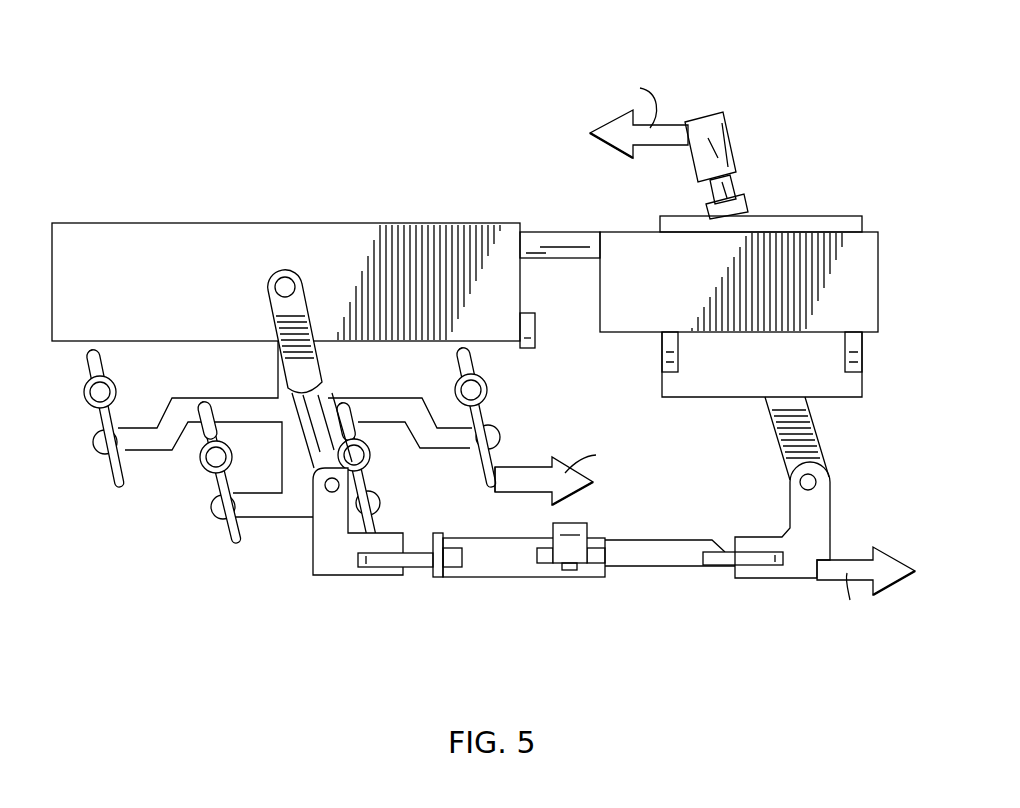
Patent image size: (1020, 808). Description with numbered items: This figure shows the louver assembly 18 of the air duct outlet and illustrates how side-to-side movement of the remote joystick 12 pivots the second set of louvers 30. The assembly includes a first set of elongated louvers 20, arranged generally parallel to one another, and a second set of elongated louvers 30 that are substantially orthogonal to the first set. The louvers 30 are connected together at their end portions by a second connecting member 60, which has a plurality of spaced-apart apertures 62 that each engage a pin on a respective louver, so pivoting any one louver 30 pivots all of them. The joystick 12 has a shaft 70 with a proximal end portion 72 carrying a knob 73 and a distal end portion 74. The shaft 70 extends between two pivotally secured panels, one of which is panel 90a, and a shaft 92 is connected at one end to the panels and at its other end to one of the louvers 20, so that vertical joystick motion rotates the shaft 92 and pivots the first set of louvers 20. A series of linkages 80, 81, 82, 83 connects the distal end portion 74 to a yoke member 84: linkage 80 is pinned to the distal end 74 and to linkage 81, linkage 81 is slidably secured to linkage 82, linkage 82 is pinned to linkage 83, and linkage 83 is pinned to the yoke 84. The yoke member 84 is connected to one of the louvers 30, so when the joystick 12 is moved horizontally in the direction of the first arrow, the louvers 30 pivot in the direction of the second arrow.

The louver assembly 18 is at (262, 168).
The first set of elongated louvers 20 is at (367, 238).
The shaft 92 is at (548, 238).
The joystick 12 is at (717, 97).
The knob 73 is at (737, 142).
The proximal end portion 72 is at (737, 183).
The joystick shaft 70 is at (748, 206).
The panel 90a is at (843, 393).
The distal end portion 74 is at (820, 452).
The linkage 80 is at (812, 534).
The linkage 81 is at (663, 553).
The linkage 82 is at (498, 562).
The linkage 83 is at (323, 563).
The yoke member 84 is at (338, 428).
The second connecting member 60 is at (183, 400).
The second set of elongated louvers 30 is at (120, 457).
The apertures 62 is at (224, 505).